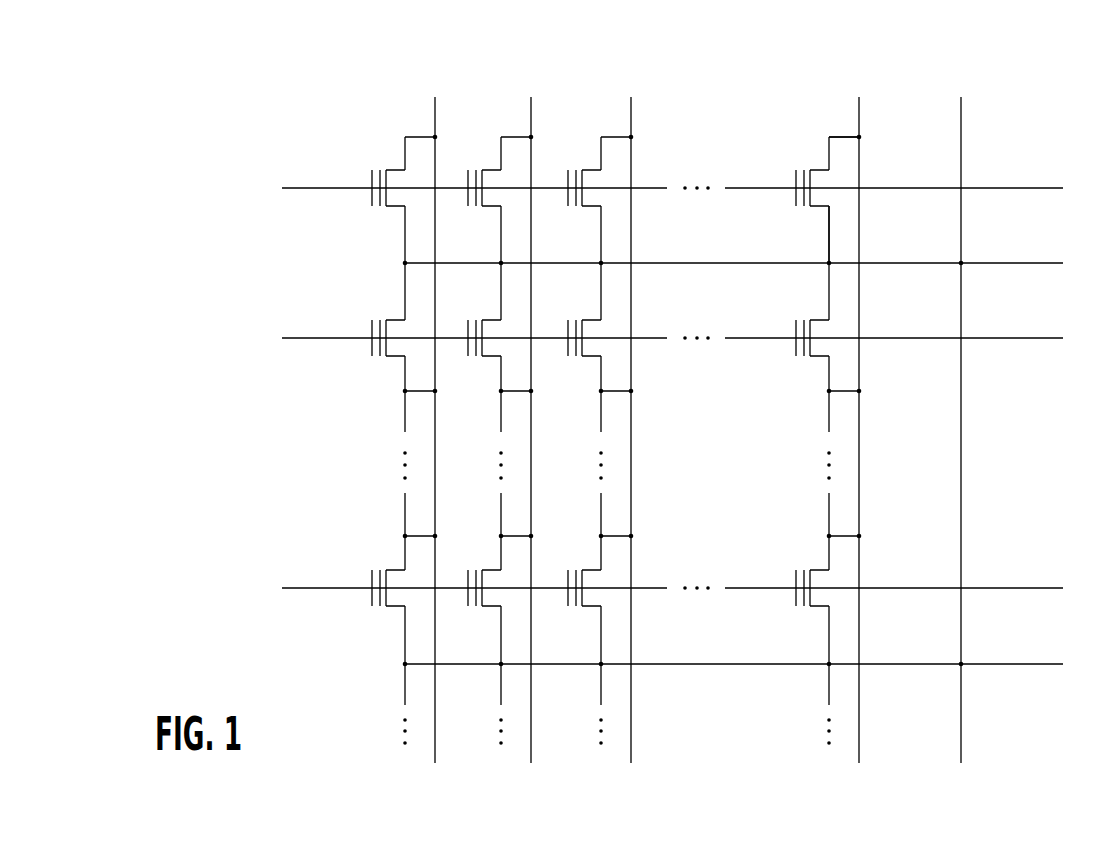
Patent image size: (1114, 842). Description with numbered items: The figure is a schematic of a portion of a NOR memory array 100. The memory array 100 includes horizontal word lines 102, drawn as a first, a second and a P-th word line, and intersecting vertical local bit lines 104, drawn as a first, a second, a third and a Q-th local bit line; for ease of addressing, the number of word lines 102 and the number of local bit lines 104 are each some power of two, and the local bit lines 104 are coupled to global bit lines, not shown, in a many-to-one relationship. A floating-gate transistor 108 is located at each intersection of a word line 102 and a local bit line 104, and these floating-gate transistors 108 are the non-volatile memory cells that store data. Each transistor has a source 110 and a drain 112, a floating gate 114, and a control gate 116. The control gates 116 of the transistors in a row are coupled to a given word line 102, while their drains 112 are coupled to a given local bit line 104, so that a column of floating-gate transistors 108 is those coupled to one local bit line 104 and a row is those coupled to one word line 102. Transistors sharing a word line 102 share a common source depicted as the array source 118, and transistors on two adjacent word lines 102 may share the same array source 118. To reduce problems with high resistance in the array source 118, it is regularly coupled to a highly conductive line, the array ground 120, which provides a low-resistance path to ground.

The NOR memory array 100 is at (1005, 70).
The word lines 102 is at (672, 366).
The local bit lines 104 is at (889, 103).
The floating-gate transistors 108 is at (578, 361).
The source 110 is at (828, 225).
The drain 112 is at (843, 136).
The floating gate 114 is at (797, 168).
The control gate 116 is at (796, 203).
The array source 118 is at (734, 439).
The array ground 120 is at (963, 138).